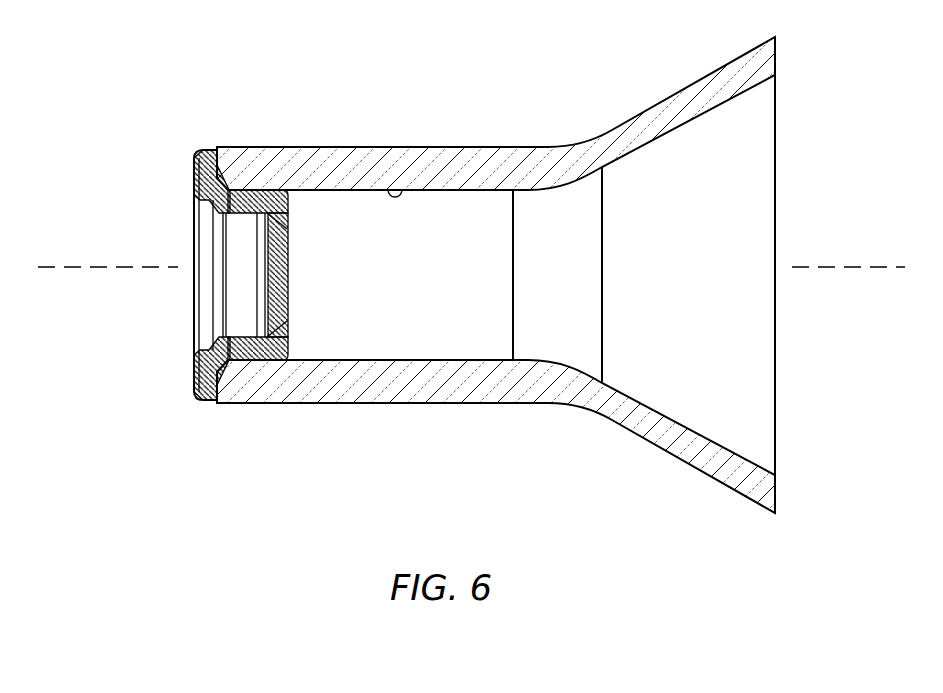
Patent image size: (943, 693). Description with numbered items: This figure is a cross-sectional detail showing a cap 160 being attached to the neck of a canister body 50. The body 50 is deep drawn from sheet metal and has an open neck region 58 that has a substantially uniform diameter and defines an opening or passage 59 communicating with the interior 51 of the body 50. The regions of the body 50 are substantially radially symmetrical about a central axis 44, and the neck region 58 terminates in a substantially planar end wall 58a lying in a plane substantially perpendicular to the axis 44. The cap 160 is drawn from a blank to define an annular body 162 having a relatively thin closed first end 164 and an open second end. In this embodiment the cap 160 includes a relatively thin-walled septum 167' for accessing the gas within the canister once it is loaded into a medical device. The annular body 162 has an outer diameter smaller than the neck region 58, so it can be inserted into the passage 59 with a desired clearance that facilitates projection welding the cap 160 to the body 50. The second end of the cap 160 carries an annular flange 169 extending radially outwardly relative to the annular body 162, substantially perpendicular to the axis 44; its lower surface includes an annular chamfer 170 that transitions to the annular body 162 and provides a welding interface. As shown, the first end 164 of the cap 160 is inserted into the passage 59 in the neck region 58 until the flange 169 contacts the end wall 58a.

The central axis 44 is at (851, 268).
The body 50 is at (463, 260).
The interior 51 is at (703, 283).
The neck region 58 is at (463, 275).
The end wall 58a is at (215, 160).
The passage 59 is at (389, 190).
The cap 160 is at (216, 284).
The annular body 162 is at (235, 216).
The first end 164 is at (281, 356).
The thin-walled septum 167' is at (332, 275).
The annular flange 169 is at (206, 396).
The annular chamfer 170 is at (231, 189).